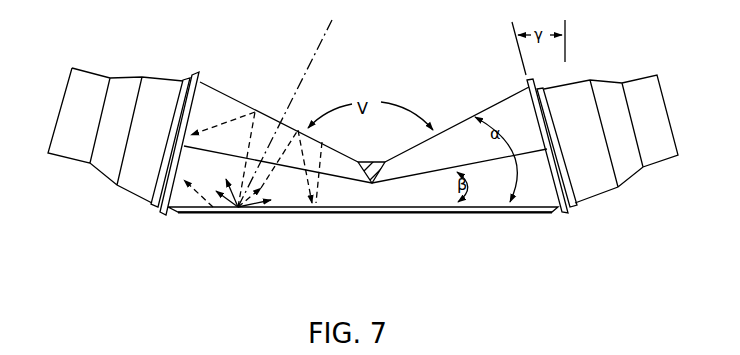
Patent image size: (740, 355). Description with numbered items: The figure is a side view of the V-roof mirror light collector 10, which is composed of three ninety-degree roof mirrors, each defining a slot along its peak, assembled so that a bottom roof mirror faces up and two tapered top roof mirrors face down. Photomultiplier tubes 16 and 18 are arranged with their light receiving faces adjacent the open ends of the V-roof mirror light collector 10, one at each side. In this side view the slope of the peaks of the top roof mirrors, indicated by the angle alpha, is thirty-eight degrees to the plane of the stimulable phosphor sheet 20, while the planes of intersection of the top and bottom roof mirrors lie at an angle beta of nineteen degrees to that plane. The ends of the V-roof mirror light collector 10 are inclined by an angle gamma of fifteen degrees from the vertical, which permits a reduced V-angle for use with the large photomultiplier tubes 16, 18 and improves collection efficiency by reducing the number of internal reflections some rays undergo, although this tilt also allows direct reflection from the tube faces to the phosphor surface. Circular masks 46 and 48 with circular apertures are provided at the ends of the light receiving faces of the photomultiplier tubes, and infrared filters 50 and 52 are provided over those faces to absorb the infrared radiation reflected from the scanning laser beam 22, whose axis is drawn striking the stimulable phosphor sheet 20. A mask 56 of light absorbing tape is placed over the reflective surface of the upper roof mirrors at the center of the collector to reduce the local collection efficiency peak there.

The V-roof mirror light collector 10 is at (441, 131).
The photomultiplier tube 16 is at (578, 90).
The photomultiplier tube 18 is at (157, 87).
The stimulable phosphor sheet 20 is at (427, 213).
The scanning laser beam 22 is at (331, 28).
The circular mask 46 is at (527, 82).
The circular mask 48 is at (200, 73).
The infrared filter 50 is at (577, 207).
The infrared filter 52 is at (191, 80).
The mask of light absorbing tape 56 is at (377, 161).